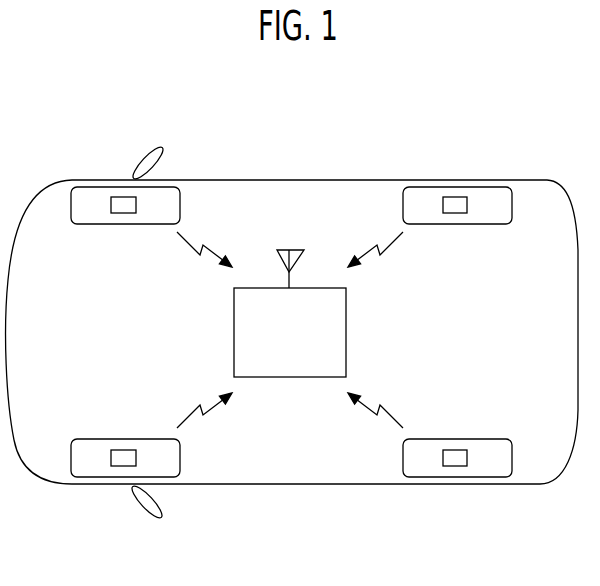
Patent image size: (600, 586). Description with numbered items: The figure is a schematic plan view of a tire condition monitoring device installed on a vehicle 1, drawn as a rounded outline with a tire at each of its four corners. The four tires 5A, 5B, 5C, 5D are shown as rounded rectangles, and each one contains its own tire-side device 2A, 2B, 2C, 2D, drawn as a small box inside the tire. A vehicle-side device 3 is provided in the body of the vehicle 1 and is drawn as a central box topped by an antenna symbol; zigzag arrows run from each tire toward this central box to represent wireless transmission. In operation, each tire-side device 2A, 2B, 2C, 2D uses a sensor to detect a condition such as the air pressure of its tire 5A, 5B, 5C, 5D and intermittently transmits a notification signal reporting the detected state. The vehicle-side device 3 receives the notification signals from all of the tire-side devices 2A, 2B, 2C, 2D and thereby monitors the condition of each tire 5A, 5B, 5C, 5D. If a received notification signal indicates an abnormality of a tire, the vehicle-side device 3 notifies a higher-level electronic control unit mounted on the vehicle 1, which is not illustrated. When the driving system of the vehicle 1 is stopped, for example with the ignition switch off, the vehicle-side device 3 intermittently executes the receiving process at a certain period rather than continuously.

The vehicle 1 is at (290, 180).
The tire-side device 2A is at (115, 197).
The tire-side device 2B is at (118, 466).
The tire-side device 2C is at (443, 197).
The tire-side device 2D is at (448, 466).
The vehicle-side device 3 is at (346, 332).
The tire 5A is at (78, 187).
The tire 5B is at (87, 478).
The tire 5C is at (412, 187).
The tire 5D is at (415, 478).